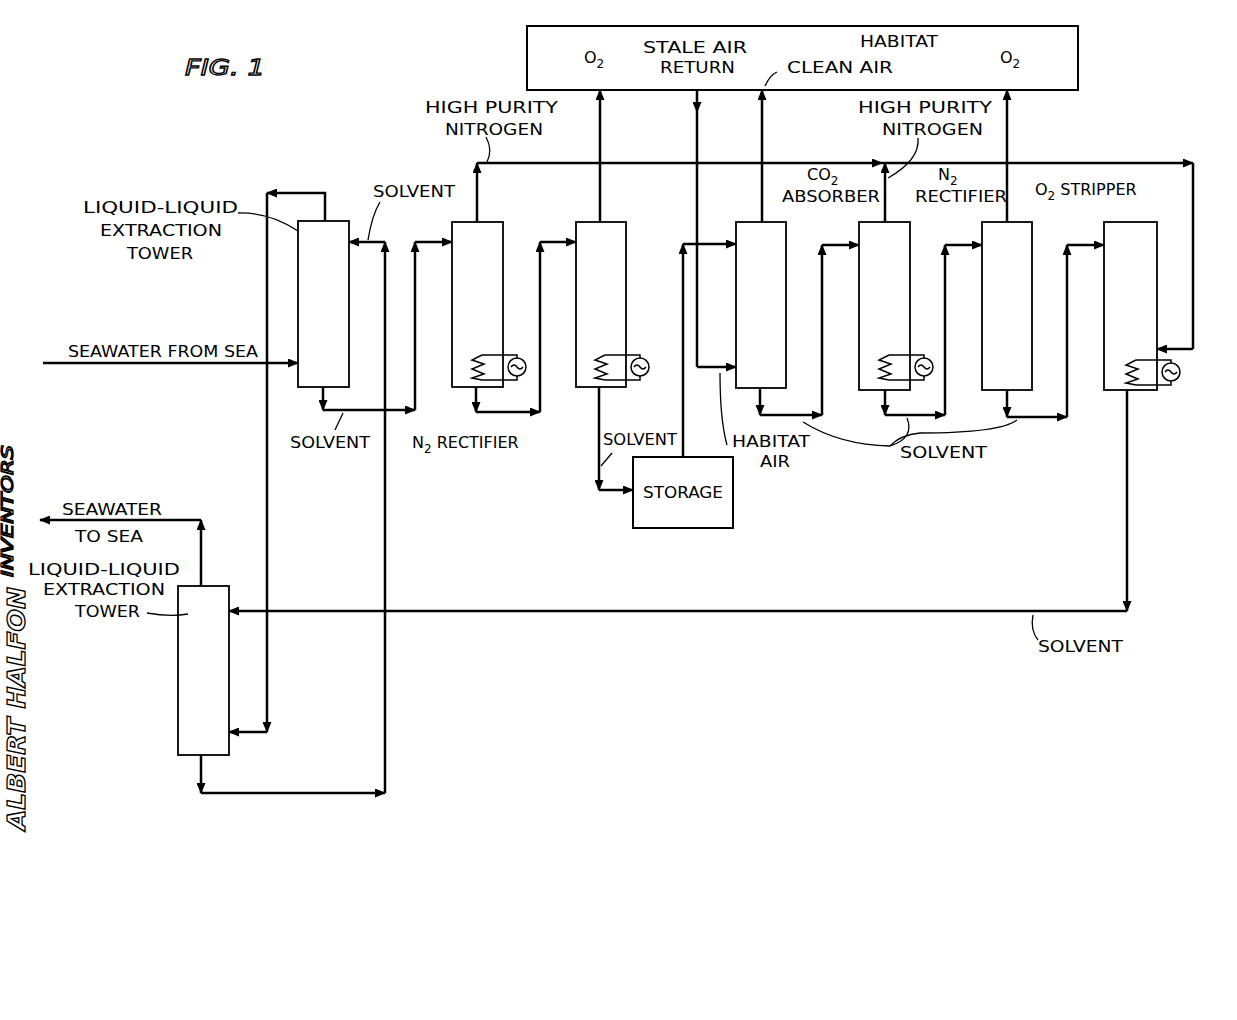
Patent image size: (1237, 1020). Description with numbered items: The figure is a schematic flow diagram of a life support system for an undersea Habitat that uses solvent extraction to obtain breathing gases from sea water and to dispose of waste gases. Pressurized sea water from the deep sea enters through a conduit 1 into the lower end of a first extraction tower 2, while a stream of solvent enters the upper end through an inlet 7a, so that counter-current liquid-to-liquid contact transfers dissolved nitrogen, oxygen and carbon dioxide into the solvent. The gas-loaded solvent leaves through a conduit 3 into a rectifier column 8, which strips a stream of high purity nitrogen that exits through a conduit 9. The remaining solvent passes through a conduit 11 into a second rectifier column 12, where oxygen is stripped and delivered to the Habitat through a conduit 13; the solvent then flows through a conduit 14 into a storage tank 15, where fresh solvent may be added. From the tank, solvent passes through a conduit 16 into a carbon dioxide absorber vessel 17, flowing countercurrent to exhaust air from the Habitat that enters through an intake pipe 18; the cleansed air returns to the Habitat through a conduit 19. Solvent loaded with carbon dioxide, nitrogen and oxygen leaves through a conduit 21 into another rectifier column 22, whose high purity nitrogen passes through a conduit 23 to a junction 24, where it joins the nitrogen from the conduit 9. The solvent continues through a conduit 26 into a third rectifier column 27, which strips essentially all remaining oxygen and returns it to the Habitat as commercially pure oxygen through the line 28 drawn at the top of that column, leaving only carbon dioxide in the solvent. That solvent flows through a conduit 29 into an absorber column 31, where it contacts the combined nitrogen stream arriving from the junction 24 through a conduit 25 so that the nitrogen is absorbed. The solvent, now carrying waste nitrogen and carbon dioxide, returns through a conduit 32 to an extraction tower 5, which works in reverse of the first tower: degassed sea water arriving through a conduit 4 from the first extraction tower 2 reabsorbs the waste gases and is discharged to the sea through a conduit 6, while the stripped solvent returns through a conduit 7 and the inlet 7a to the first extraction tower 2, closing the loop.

The conduit 1 is at (58, 363).
The first extraction tower 2 is at (298, 270).
The conduit 3 is at (323, 395).
The conduit 4 is at (325, 212).
The extraction tower 5 is at (178, 680).
The conduit 6 is at (201, 516).
The conduit 7 is at (201, 768).
The inlet 7a is at (386, 240).
The rectifier column 8 is at (503, 240).
The conduit 9 is at (477, 190).
The conduit 11 is at (490, 402).
The second rectifier column 12 is at (626, 287).
The conduit 13 is at (600, 137).
The conduit 14 is at (599, 465).
The tank 15 is at (637, 508).
The conduit 16 is at (683, 443).
The carbon dioxide absorber vessel 17 is at (775, 350).
The intake pipe 18 is at (698, 348).
The conduit 19 is at (763, 142).
The conduit 21 is at (763, 404).
The rectifier column 22 is at (903, 302).
The conduit 23 is at (885, 211).
The junction 24 is at (885, 160).
The conduit 25 is at (1053, 163).
The conduit 26 is at (890, 404).
The third rectifier column 27 is at (1025, 299).
The oxygen line to habitat 28 is at (1008, 142).
The conduit 29 is at (1010, 405).
The absorber column 31 is at (1150, 292).
The conduit 32 is at (1128, 530).